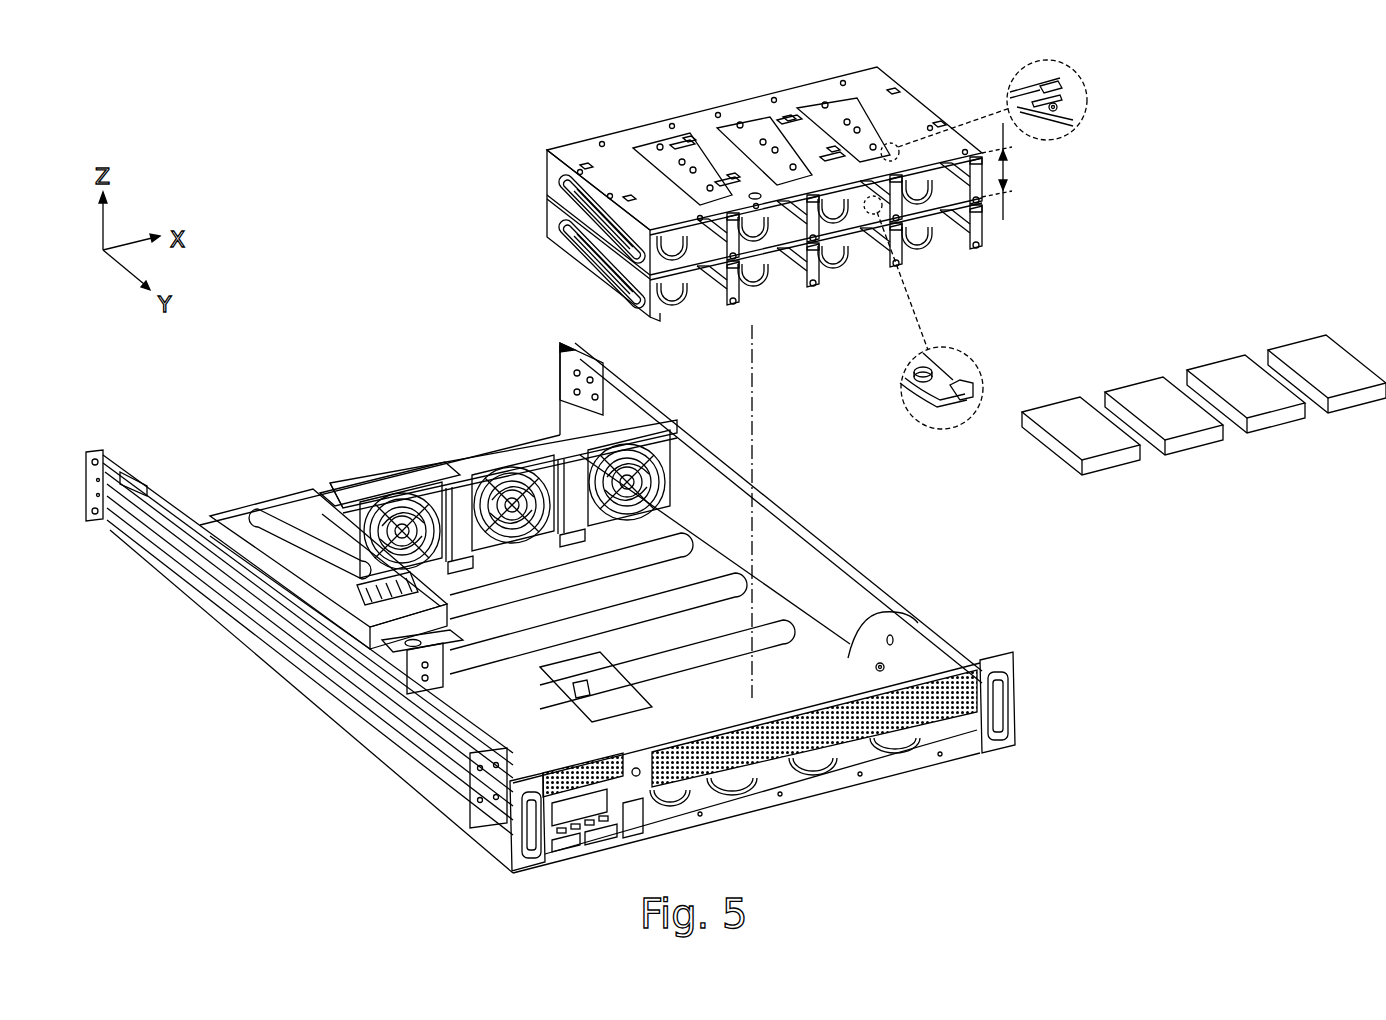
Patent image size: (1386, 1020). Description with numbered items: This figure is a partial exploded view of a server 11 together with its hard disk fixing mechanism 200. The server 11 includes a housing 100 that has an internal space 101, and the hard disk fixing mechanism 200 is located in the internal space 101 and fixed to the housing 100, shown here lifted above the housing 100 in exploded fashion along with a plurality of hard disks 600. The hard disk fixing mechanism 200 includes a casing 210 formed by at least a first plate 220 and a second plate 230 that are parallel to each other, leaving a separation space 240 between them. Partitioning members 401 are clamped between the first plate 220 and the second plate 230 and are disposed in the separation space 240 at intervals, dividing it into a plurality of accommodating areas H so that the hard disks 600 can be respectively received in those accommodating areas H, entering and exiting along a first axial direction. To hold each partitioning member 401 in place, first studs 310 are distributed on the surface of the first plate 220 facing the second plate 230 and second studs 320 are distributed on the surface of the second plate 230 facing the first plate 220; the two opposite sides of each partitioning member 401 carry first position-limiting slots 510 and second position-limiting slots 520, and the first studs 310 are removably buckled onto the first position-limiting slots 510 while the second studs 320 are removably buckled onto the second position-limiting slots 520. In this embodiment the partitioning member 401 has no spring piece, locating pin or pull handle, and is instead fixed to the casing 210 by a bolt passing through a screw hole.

The server 11 is at (1262, 90).
The housing 100 is at (821, 811).
The internal space 101 is at (849, 653).
The hard disk fixing mechanism 200 is at (447, 176).
The casing 210 is at (540, 173).
The first plate 220 is at (917, 212).
The second plate 230 is at (857, 87).
The separation space 240 is at (1010, 178).
The first stud 310 is at (913, 358).
The second stud 320 is at (1058, 106).
The partitioning member 401 is at (652, 325).
The first position-limiting slot 510 is at (962, 406).
The second position-limiting slot 520 is at (1063, 85).
The hard disks 600 is at (1112, 462).
The accommodating areas H is at (765, 251).